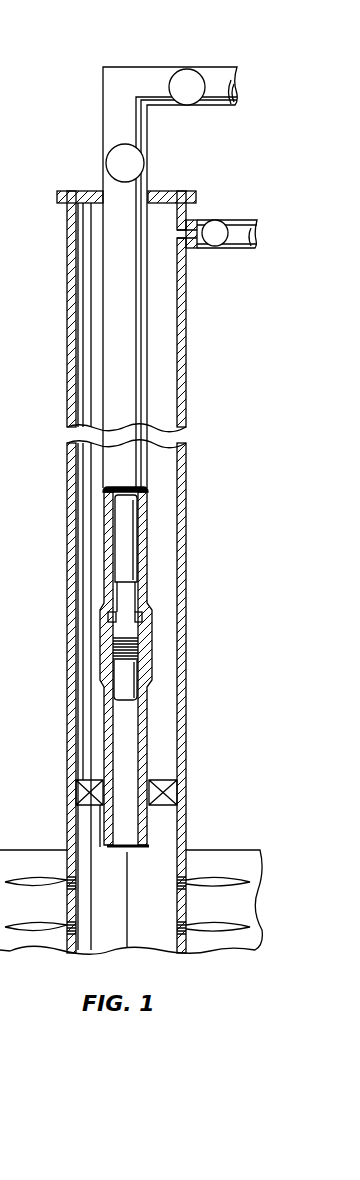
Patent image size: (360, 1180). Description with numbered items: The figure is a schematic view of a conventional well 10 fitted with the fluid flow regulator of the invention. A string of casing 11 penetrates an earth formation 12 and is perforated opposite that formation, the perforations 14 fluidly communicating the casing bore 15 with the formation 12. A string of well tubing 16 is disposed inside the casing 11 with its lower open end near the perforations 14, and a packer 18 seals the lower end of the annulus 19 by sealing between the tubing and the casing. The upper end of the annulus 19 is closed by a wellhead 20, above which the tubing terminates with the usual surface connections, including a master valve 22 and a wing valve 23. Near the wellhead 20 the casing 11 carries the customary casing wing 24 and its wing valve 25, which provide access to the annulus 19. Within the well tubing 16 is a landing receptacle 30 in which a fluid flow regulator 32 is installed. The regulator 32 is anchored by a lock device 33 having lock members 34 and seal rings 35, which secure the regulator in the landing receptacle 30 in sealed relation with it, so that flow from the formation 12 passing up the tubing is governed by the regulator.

The well 10 is at (40, 245).
The casing 11 is at (70, 373).
The earth formation 12 is at (238, 858).
The perforations 14 is at (180, 885).
The casing bore 15 is at (76, 399).
The well tubing 16 is at (137, 343).
The packer 18 is at (170, 790).
The annulus 19 is at (168, 730).
The wellhead 20 is at (168, 200).
The master valve 22 is at (112, 150).
The wing valve 23 is at (187, 69).
The casing wing 24 is at (205, 221).
The wing valve 25 is at (222, 221).
The landing receptacle 30 is at (107, 623).
The fluid flow regulator 32 is at (127, 678).
The lock device 33 is at (137, 600).
The lock members 34 is at (150, 617).
The seal rings 35 is at (140, 643).